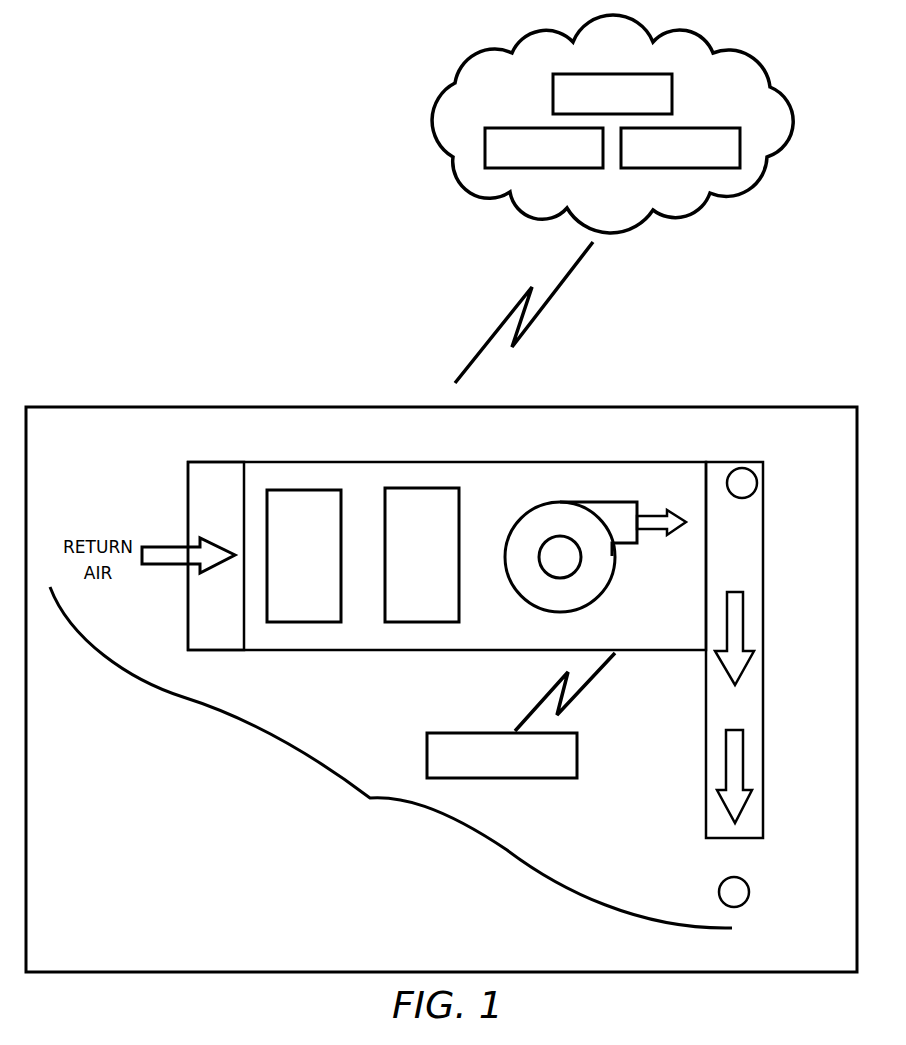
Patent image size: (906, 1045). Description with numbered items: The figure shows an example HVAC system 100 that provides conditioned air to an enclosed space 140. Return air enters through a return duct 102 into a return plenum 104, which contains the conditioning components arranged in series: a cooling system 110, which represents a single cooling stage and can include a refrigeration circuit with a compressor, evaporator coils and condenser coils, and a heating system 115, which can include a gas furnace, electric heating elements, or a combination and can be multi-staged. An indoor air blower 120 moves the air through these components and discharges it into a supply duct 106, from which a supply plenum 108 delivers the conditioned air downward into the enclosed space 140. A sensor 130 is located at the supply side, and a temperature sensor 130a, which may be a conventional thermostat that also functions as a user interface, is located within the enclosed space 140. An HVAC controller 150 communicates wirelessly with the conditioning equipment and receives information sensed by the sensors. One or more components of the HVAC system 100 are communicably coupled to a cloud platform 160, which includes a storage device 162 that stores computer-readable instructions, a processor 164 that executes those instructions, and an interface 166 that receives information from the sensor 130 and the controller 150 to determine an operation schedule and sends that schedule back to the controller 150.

The HVAC system 100 is at (391, 757).
The return duct 102 is at (221, 650).
The return plenum 104 is at (524, 462).
The supply duct 106 is at (766, 554).
The supply plenum 108 is at (706, 758).
The cooling system 110 is at (289, 579).
The heating system 115 is at (407, 579).
The indoor air blower 120 is at (605, 578).
The sensor 130 is at (760, 470).
The temperature sensor 130a is at (720, 880).
The enclosed space 140 is at (545, 961).
The HVAC controller 150 is at (460, 733).
The cloud platform 160 is at (463, 192).
The storage device 162 is at (526, 128).
The processor 164 is at (696, 128).
The interface 166 is at (610, 74).